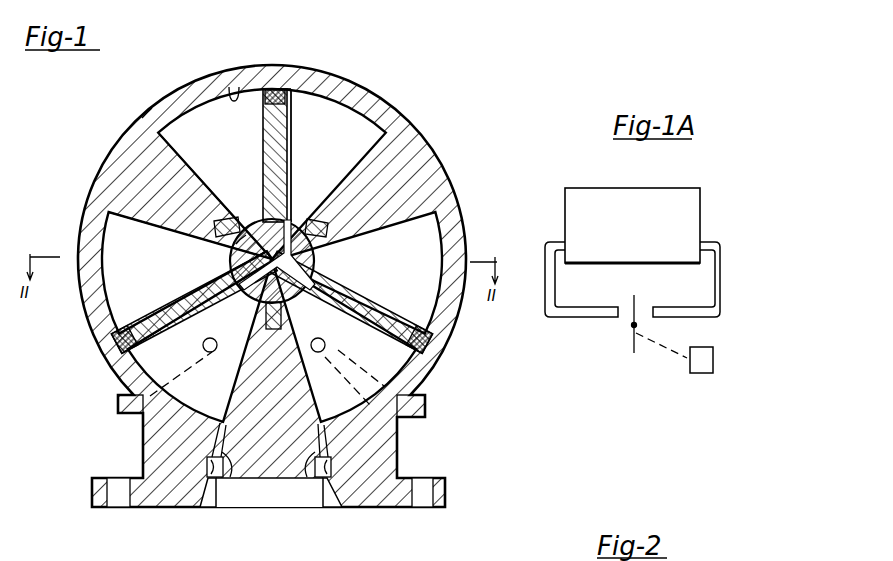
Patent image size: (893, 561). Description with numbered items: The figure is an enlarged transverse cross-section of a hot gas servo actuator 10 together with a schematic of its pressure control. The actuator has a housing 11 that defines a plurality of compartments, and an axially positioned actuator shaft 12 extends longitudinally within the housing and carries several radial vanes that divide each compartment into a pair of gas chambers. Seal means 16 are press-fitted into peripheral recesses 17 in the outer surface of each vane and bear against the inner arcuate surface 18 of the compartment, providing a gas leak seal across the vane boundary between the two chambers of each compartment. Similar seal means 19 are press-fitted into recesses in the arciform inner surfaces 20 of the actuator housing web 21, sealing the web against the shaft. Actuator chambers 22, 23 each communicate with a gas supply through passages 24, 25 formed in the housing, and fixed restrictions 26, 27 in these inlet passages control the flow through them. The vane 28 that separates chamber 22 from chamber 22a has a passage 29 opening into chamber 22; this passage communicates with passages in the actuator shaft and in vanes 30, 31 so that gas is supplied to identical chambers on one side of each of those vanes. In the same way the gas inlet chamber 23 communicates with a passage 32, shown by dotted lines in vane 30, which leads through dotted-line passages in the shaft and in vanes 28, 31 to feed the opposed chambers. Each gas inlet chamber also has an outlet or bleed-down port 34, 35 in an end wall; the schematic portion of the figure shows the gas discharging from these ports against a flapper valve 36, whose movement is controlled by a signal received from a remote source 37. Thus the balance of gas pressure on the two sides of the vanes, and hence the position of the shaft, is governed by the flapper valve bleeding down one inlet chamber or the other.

In FIG. 1, the servo actuator 10 is at (214, 62).
In FIG. 1A, the servo actuator 10 is at (580, 177).
In FIG. 1, the housing 11 is at (152, 108).
In FIG. 1, the actuator shaft 12 is at (291, 221).
In FIG. 1, the seal means 16 is at (285, 101).
In FIG. 1, the peripheral recesses 17 is at (281, 89).
In FIG. 1, the inner arcuate surface 18 is at (234, 90).
In FIG. 1, the seal means 19 is at (230, 215).
In FIG. 1, the arciform inner surfaces 20 is at (238, 243).
In FIG. 1, the actuator housing web 21 is at (157, 224).
In FIG. 1, the chamber 22a is at (162, 283).
In FIG. 1, the actuator chamber 22 is at (206, 405).
In FIG. 1, the actuator chamber 23 is at (336, 402).
In FIG. 1, the passage 24 is at (219, 465).
In FIG. 1, the passage 25 is at (310, 462).
In FIG. 1, the fixed restriction 26 is at (217, 478).
In FIG. 1, the fixed restriction 27 is at (325, 478).
In FIG. 1, the vane 28 is at (170, 322).
In FIG. 1, the passage 29 is at (226, 292).
In FIG. 1, the vane 30 is at (378, 333).
In FIG. 1, the vane 31 is at (288, 162).
In FIG. 1, the passage 32 is at (308, 303).
In FIG. 1, the bleed-down port 34 is at (325, 345).
In FIG. 1A, the bleed-down port 34 is at (713, 243).
In FIG. 1, the bleed-down port 35 is at (203, 346).
In FIG. 1A, the bleed-down port 35 is at (546, 254).
In FIG. 1A, the flapper valve 36 is at (640, 306).
In FIG. 1A, the remote source 37 is at (712, 362).